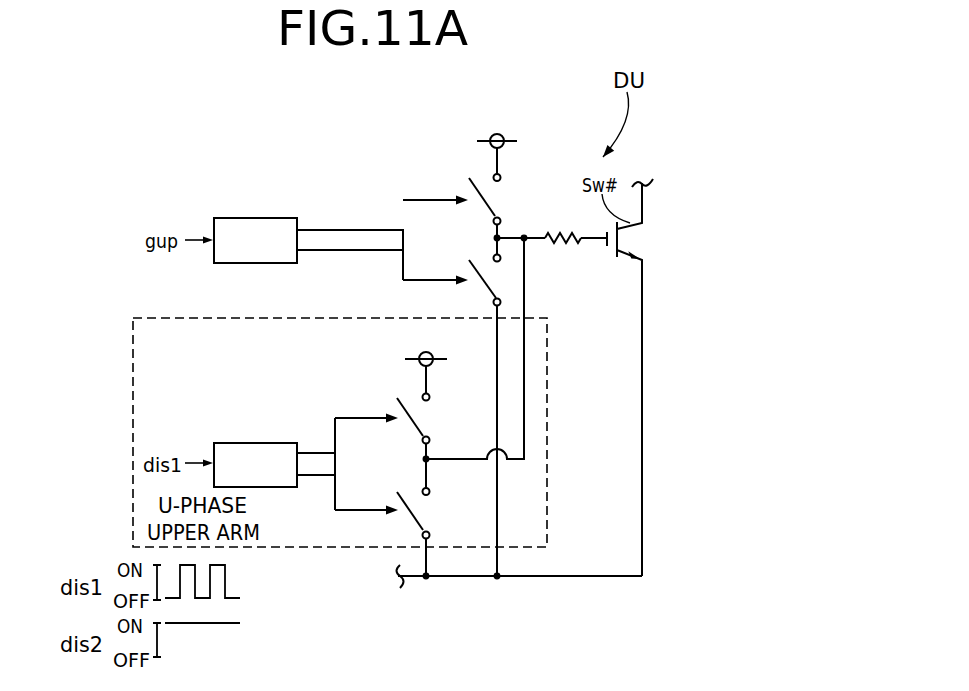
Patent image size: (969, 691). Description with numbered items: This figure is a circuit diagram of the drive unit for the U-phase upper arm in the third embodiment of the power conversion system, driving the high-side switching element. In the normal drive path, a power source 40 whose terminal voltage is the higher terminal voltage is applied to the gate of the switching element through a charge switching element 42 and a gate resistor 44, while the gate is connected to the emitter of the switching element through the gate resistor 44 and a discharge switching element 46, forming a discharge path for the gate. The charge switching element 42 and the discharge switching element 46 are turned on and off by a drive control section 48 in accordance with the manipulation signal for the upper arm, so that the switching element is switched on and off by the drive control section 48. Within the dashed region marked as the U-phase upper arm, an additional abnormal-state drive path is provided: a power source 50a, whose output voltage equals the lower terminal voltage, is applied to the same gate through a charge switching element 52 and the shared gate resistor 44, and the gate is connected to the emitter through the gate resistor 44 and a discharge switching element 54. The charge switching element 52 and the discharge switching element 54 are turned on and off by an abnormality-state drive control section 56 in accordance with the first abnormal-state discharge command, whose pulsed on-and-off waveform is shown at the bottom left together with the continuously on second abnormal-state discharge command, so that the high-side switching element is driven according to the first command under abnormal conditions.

The power source 40 is at (490, 146).
The charge switching element 42 is at (490, 197).
The gate resistor 44 is at (572, 248).
The discharge switching element 46 is at (487, 287).
The drive control section 48 is at (253, 218).
The power source 50a is at (420, 364).
The charge switching element 52 is at (417, 417).
The discharge switching element 54 is at (419, 512).
The abnormality-state drive control section 56 is at (253, 443).